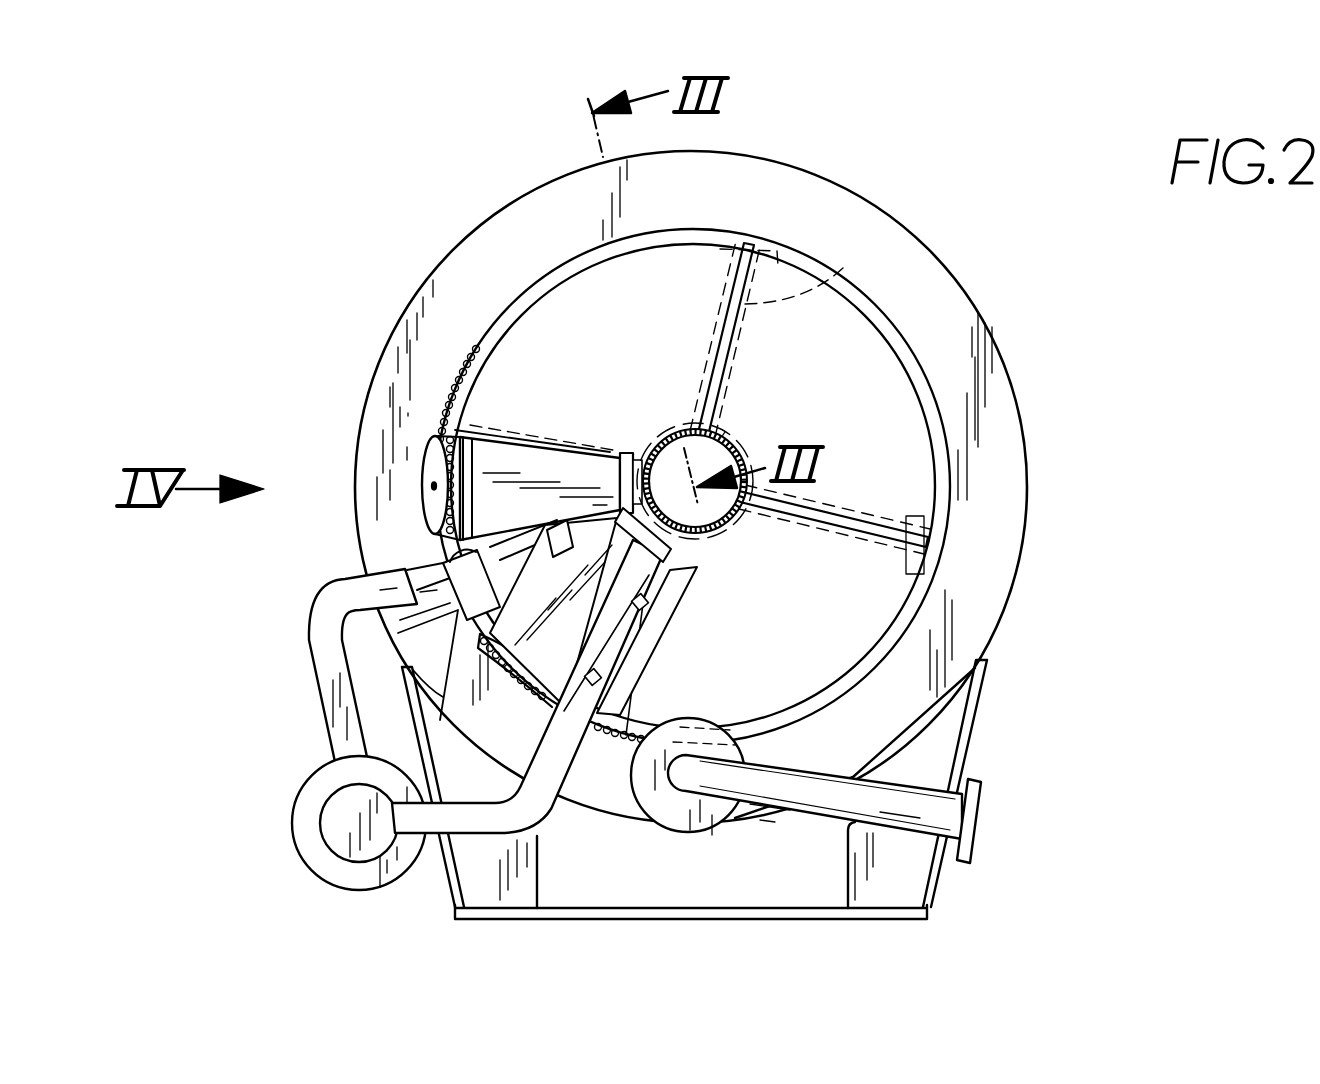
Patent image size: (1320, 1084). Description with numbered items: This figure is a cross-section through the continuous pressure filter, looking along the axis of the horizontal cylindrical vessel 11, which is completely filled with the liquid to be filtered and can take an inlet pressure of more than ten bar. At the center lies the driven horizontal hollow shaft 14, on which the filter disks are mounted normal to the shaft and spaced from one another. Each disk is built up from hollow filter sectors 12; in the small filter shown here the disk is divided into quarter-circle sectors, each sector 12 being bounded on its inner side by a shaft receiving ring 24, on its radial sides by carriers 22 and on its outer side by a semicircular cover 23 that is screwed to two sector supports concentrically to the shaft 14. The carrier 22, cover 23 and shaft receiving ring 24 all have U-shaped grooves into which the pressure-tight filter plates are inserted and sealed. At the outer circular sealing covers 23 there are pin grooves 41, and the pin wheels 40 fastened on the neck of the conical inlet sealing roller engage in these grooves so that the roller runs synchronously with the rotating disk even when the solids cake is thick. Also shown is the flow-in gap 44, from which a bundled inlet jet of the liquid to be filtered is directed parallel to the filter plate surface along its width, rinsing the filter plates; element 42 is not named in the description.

The cylindrical vessel 11 is at (1000, 420).
The hollow filter sector 12 is at (895, 340).
The hollow shaft 14 is at (707, 460).
The carrier 22 is at (843, 268).
The cover 23 is at (847, 340).
The shaft receiving ring 24 is at (725, 432).
The pin wheel 40 is at (410, 453).
The pin groove 41 is at (455, 385).
The supply pipe 42 is at (623, 645).
The flow-in gap 44 is at (682, 597).